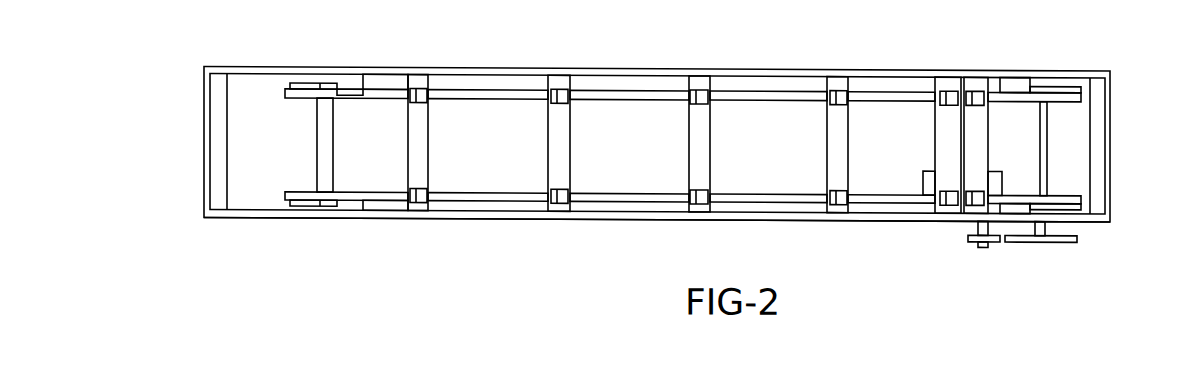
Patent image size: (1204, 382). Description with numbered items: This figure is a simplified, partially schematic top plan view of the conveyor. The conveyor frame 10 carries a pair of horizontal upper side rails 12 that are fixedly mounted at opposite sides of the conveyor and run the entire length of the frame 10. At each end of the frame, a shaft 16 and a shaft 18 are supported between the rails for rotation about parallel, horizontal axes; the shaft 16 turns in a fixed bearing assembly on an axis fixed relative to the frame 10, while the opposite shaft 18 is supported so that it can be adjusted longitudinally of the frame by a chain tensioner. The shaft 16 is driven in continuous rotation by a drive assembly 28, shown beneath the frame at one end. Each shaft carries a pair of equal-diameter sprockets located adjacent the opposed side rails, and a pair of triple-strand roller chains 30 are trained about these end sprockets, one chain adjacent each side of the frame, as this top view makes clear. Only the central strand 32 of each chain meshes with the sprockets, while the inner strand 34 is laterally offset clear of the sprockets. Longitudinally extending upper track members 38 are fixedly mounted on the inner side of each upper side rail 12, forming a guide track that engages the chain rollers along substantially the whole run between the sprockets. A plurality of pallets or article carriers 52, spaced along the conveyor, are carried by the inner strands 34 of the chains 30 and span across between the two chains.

The conveyor frame 10 is at (245, 222).
The upper side rails 12 is at (788, 218).
The shaft 16 is at (1050, 152).
The shaft 18 is at (325, 155).
The drive assembly 28 is at (1010, 251).
The triple-strand roller chains 30 is at (388, 190).
The central strand 32 is at (292, 86).
The inner strand 34 is at (296, 96).
The upper track member 38 is at (465, 75).
The pallets or article carriers 52 is at (547, 160).